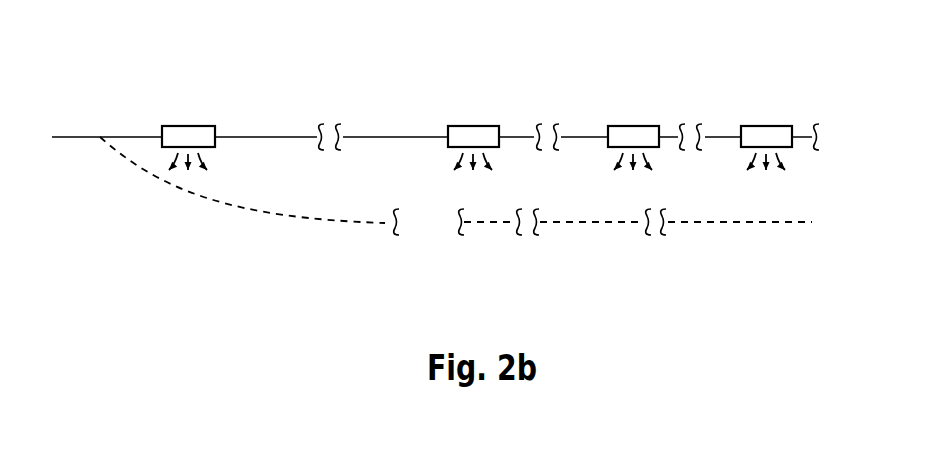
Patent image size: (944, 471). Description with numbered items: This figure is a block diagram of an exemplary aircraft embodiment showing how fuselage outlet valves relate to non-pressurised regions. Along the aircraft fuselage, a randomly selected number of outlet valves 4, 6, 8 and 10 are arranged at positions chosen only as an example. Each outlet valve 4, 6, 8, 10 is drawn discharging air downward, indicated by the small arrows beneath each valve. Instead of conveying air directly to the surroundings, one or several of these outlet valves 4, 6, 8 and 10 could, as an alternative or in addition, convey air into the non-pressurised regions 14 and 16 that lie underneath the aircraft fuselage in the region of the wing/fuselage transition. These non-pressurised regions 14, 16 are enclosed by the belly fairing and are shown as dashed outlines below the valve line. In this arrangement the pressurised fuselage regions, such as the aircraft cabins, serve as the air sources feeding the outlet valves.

The outlet valve 4 is at (196, 127).
The outlet valve 6 is at (479, 127).
The outlet valve 8 is at (641, 127).
The outlet valve 10 is at (773, 127).
The non-pressurised region 14 is at (266, 198).
The non-pressurised region 16 is at (715, 205).